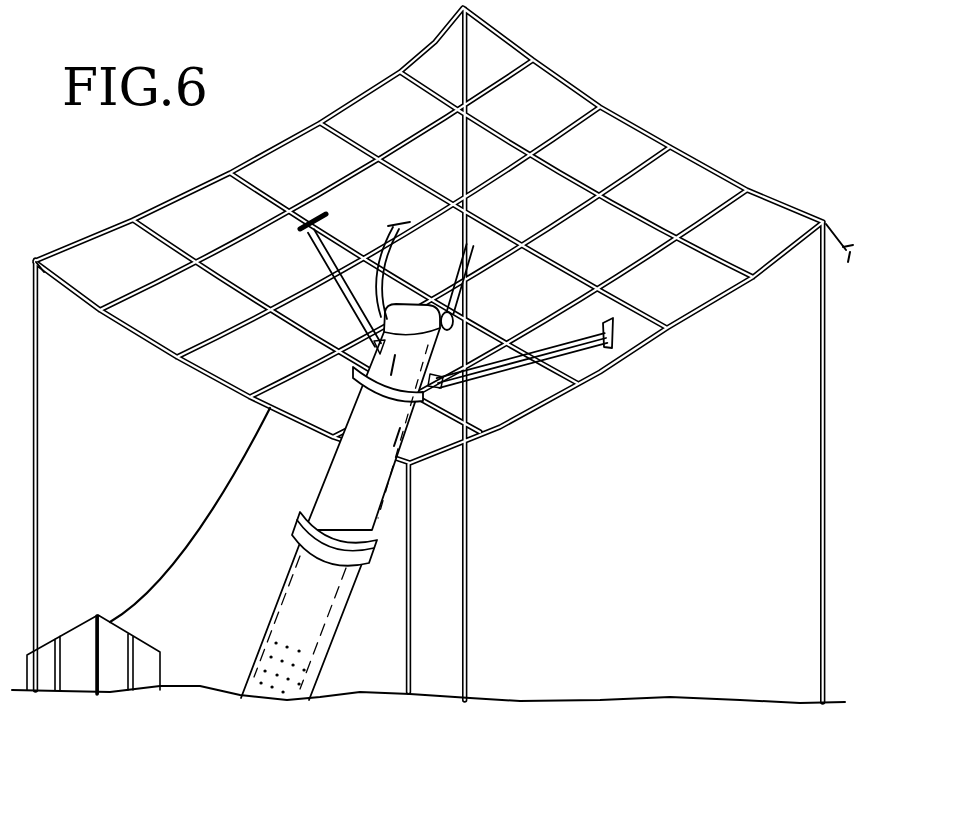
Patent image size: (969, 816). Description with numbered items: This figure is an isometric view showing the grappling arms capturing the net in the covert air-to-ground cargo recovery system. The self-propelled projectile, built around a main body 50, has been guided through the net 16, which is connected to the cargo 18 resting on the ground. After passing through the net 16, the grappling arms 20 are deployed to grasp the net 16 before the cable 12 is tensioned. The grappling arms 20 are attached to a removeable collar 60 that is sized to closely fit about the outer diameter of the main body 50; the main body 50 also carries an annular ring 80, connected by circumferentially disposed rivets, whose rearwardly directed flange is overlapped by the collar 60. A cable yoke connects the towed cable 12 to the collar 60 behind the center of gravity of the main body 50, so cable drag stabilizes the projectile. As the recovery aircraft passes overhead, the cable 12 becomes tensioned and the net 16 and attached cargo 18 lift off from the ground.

The cable 12 is at (395, 232).
The net 16 is at (707, 168).
The cargo 18 is at (98, 615).
The grappling arms 20 is at (618, 348).
The main body 50 is at (290, 572).
The removeable collar 60 is at (372, 417).
The annular ring 80 is at (372, 558).